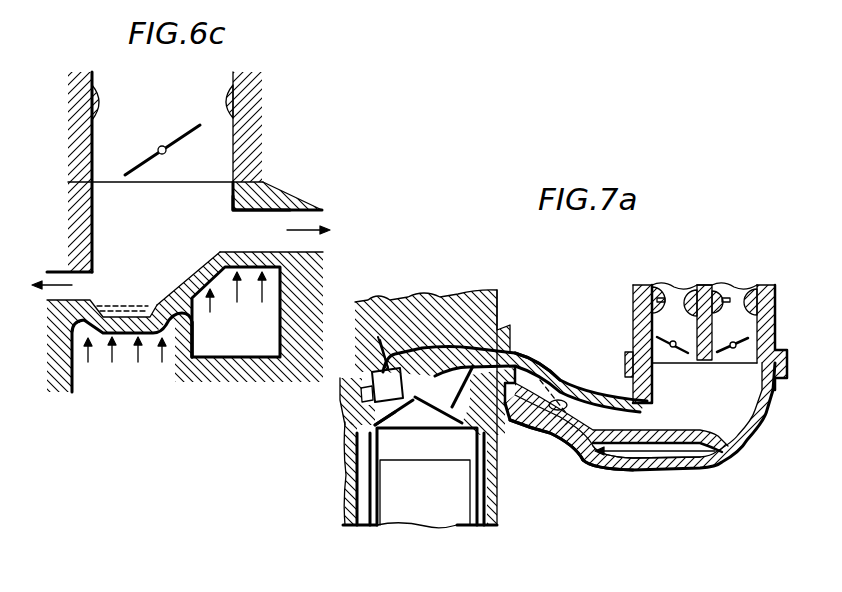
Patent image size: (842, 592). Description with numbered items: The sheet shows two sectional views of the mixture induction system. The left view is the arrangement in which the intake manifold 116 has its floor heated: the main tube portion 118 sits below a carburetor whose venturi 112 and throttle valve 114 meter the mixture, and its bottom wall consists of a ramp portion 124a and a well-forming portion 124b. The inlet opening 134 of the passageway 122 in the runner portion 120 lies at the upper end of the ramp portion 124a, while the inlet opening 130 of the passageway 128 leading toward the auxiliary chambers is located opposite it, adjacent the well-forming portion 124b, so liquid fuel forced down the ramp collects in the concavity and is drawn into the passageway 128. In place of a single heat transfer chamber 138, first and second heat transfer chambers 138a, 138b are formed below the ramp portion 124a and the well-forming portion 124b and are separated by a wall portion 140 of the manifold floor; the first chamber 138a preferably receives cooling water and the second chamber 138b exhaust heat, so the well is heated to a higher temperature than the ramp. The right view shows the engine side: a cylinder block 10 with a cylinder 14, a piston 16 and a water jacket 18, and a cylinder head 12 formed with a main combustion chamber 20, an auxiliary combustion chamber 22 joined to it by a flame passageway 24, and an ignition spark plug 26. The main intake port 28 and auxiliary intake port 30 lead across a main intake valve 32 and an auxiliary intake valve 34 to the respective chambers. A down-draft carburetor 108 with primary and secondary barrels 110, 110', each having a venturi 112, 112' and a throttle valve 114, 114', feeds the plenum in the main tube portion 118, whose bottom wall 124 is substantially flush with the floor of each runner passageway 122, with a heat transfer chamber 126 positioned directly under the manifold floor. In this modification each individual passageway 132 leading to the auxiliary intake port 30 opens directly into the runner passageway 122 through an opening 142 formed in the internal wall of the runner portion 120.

In FIG. 6c, the venturi 112 is at (130, 102).
In FIG. 7a, the venturi 112 is at (627, 286).
In FIG. 6c, the throttle valve 114 is at (151, 150).
In FIG. 7a, the throttle valve 114 is at (674, 366).
In FIG. 6c, the intake manifold 116 is at (283, 188).
In FIG. 7a, the intake manifold 116 is at (596, 382).
In FIG. 6c, the main tube portion 118 is at (94, 214).
In FIG. 7a, the main tube portion 118 is at (745, 428).
In FIG. 6c, the runner portion 120 is at (318, 190).
In FIG. 7a, the runner portion 120 is at (567, 437).
In FIG. 6c, the passageway 122 is at (313, 252).
In FIG. 6c, the ramp portion 124a is at (212, 258).
In FIG. 6c, the well-forming portion 124b is at (130, 316).
In FIG. 6c, the passageway 128 is at (72, 298).
In FIG. 6c, the inlet opening 130 is at (90, 262).
In FIG. 6c, the inlet opening 134 is at (243, 232).
In FIG. 6c, the heat transfer chamber 138 is at (262, 103).
In FIG. 6c, the first heat transfer chamber 138a is at (272, 338).
In FIG. 6c, the second heat transfer chamber 138b is at (133, 398).
In FIG. 6c, the wall portion 140 is at (193, 340).
In FIG. 7a, the cylinder block 10 is at (500, 517).
In FIG. 7a, the cylinder head 12 is at (497, 294).
In FIG. 7a, the cylinder 14 is at (470, 518).
In FIG. 7a, the piston 16 is at (417, 518).
In FIG. 7a, the water jacket 18 is at (358, 527).
In FIG. 7a, the main combustion chamber 20 is at (432, 421).
In FIG. 7a, the auxiliary combustion chamber 22 is at (403, 372).
In FIG. 7a, the flame passageway 24 is at (372, 416).
In FIG. 7a, the ignition spark plug 26 is at (380, 340).
In FIG. 7a, the main intake port 28 is at (512, 424).
In FIG. 7a, the auxiliary intake port 30 is at (473, 347).
In FIG. 7a, the main intake valve 32 is at (412, 424).
In FIG. 7a, the auxiliary intake valve 34 is at (388, 366).
In FIG. 7a, the carburetor 108 is at (633, 295).
In FIG. 7a, the primary barrel 110 is at (681, 301).
In FIG. 7a, the secondary barrel 110' is at (730, 272).
In FIG. 7a, the venturi 112' is at (771, 324).
In FIG. 7a, the throttle valve 114' is at (727, 366).
In FIG. 7a, the bottom wall 124 is at (713, 455).
In FIG. 7a, the heat transfer chamber 126 is at (647, 462).
In FIG. 7a, the passageway 132 is at (517, 352).
In FIG. 7a, the opening 142 is at (594, 458).